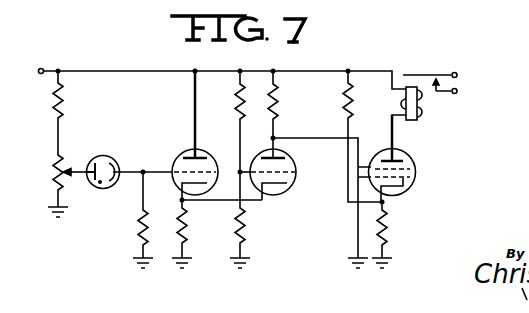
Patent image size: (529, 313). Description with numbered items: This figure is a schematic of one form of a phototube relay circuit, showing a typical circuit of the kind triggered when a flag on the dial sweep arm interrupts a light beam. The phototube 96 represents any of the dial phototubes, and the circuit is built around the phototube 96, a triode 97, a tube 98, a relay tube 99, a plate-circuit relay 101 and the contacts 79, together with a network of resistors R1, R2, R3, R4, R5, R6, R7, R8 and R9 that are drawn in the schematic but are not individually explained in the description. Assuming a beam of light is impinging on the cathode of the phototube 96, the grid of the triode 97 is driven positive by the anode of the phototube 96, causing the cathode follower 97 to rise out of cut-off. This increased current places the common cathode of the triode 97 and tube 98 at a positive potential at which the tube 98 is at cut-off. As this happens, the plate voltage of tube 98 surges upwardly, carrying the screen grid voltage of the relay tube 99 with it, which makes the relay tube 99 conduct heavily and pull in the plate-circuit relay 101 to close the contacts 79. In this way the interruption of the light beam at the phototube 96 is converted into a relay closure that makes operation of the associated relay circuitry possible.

The resistor R1 is at (63, 101).
The potentiometer R2 is at (54, 169).
The resistor R3 is at (138, 240).
The cathode resistor R4 is at (188, 238).
The plate resistor R5 is at (238, 110).
The cathode resistor R6 is at (253, 234).
The plate resistor R7 is at (278, 103).
The resistor R8 is at (353, 104).
The cathode resistor R9 is at (387, 233).
The phototube 96 is at (102, 190).
The triode 97 is at (186, 150).
The tube 98 is at (283, 192).
The relay tube 99 is at (412, 183).
The plate-circuit relay 101 is at (416, 122).
The contacts 79 is at (459, 83).